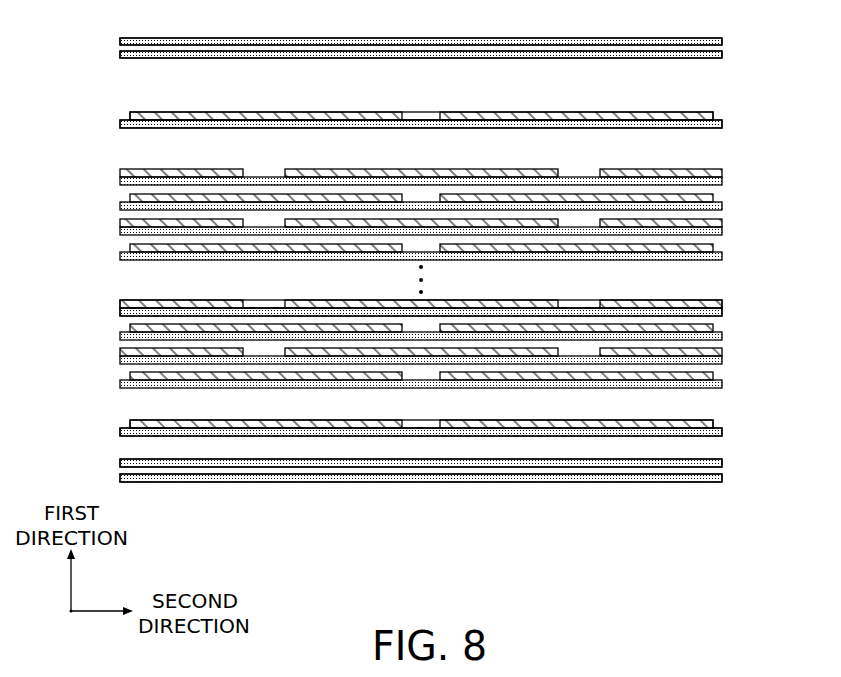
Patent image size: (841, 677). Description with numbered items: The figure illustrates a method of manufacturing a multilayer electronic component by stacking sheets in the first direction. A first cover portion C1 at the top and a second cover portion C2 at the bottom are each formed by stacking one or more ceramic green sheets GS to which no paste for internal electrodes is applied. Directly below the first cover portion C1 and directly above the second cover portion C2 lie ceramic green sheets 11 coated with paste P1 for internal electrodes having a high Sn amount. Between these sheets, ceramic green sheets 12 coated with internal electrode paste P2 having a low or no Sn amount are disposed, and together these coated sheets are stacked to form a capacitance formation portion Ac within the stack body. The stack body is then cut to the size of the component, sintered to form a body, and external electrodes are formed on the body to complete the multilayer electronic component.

The ceramic green sheet GS is at (722, 40).
The paste for internal electrodes having a high Sn amount P1 is at (703, 112).
The internal electrode paste having a low or no Sn amount P2 is at (702, 300).
The ceramic green sheet coated with paste P1 11 is at (793, 86).
The ceramic green sheet coated with internal electrode paste P2 12 is at (793, 275).
The first cover portion C1 is at (110, 38).
The second cover portion C2 is at (110, 460).
The capacitance formation portion Ac is at (118, 437).